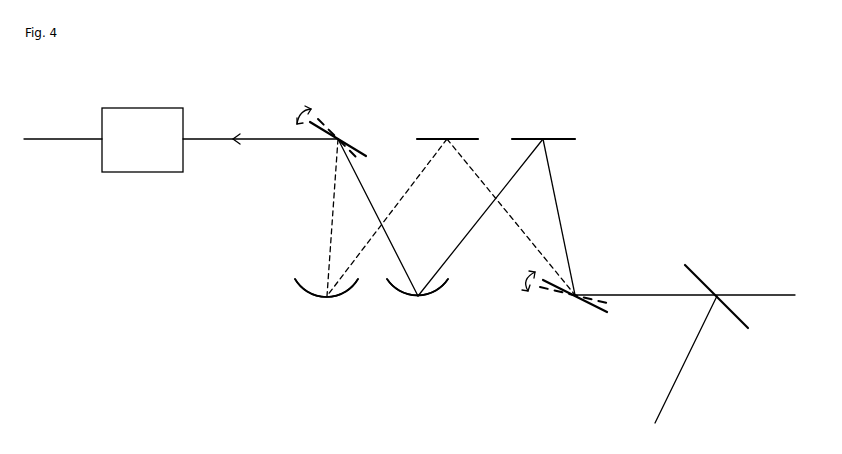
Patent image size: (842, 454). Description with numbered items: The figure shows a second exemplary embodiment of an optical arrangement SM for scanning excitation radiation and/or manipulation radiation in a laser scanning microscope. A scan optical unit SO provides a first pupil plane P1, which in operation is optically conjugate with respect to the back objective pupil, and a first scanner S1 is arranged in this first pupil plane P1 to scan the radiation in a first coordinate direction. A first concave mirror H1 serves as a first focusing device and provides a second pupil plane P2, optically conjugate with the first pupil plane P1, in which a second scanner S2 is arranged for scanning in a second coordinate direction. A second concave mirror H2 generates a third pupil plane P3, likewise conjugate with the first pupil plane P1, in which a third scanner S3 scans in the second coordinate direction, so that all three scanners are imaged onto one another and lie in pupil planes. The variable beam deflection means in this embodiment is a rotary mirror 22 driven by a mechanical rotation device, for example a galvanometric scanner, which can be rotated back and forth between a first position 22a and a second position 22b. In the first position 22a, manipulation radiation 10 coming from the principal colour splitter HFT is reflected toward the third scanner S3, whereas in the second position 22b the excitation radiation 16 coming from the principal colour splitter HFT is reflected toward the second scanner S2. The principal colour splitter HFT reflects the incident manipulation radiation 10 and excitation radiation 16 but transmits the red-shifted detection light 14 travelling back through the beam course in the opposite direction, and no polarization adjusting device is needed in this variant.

The scan optical unit SO is at (147, 144).
The optical arrangement SM is at (203, 302).
The first scanner S1 is at (340, 124).
The first pupil plane P1 is at (323, 123).
The second scanner S2 is at (447, 117).
The second pupil plane P2 is at (437, 135).
The third scanner S3 is at (546, 117).
The third pupil plane P3 is at (562, 137).
The first concave mirror H1 is at (305, 295).
The second concave mirror H2 is at (398, 297).
The manipulation radiation 10 is at (395, 243).
The excitation radiation 16 is at (330, 240).
The rotary mirror 22 is at (558, 320).
The first position 22a is at (600, 312).
The second position 22b is at (548, 292).
The detection light 14 is at (763, 293).
The principal colour splitter HFT is at (698, 272).